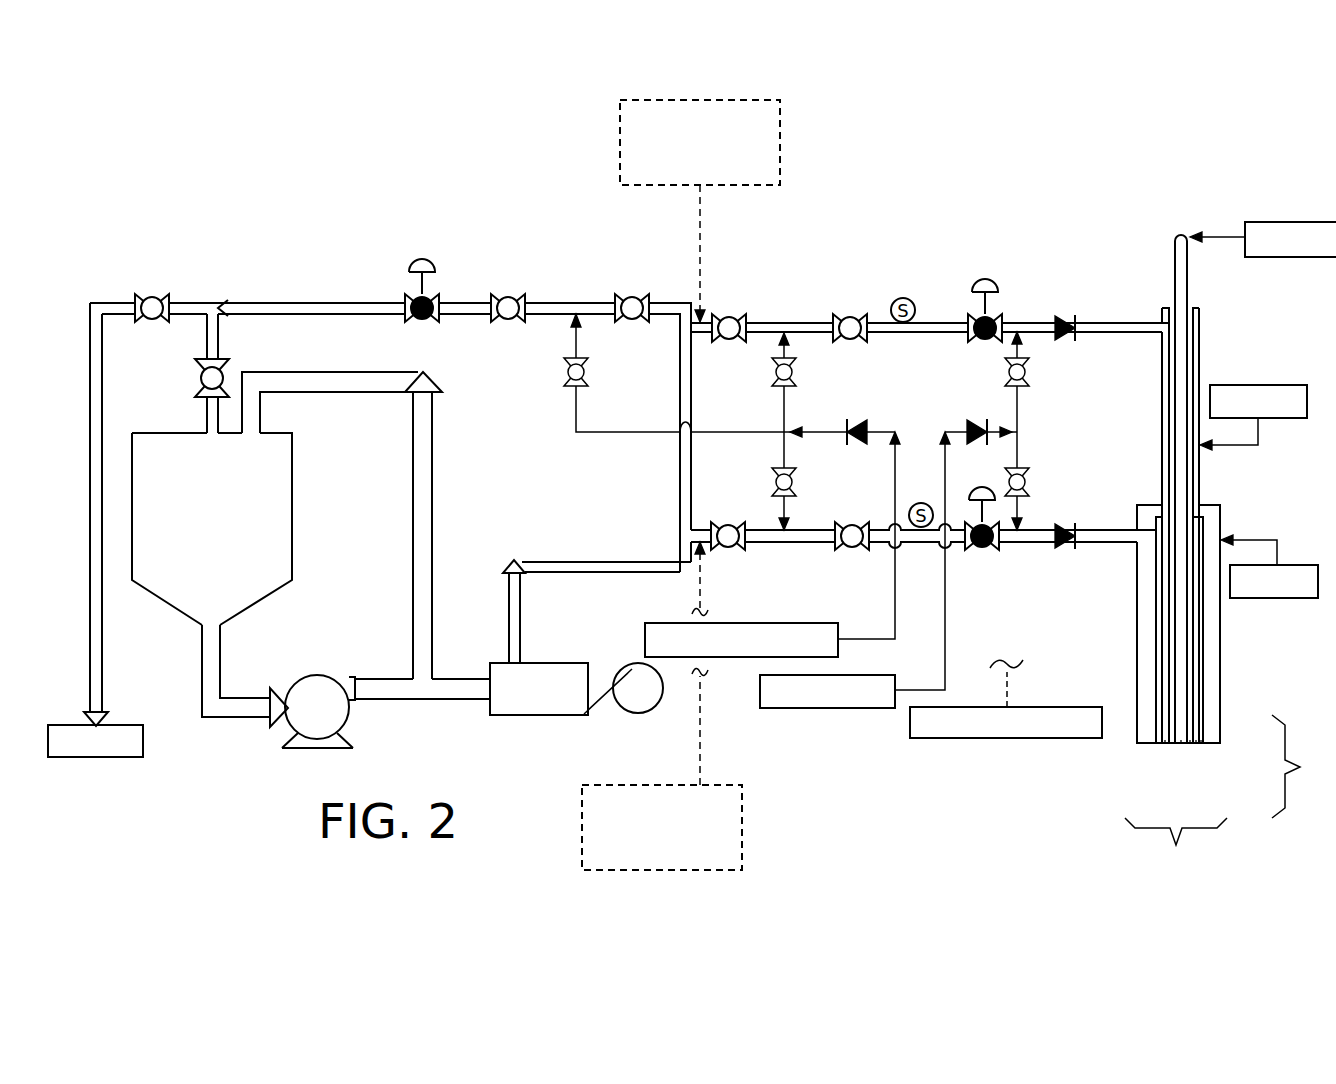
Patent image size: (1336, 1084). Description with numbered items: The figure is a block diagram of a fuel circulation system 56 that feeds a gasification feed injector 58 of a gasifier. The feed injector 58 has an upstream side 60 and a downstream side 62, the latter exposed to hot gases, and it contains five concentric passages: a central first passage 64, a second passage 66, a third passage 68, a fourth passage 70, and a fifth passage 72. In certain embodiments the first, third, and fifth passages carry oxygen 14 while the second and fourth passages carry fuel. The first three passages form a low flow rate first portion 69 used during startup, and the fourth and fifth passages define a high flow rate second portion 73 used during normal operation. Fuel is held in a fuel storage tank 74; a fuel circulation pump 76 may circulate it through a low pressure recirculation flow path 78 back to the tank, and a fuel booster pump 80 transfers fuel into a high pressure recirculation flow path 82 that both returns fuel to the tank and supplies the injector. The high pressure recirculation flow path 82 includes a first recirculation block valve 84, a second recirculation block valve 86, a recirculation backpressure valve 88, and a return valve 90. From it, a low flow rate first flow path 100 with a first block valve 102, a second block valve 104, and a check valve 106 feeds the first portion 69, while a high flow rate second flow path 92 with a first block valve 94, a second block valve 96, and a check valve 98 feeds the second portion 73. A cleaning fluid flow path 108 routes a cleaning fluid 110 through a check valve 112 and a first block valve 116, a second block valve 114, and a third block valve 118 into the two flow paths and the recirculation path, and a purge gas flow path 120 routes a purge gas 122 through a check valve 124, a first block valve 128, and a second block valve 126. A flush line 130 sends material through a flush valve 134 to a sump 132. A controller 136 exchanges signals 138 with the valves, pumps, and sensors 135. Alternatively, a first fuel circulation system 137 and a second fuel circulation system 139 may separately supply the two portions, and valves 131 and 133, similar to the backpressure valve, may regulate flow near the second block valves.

The oxygen 14 is at (1296, 222).
The fuel circulation system 56 is at (1002, 188).
The gasification feed injector 58 is at (1215, 315).
The upstream side 60 is at (1172, 222).
The downstream side 62 is at (1140, 758).
The first passage 64 is at (1164, 745).
The second passage 66 is at (1181, 745).
The third passage 68 is at (1190, 745).
The first portion 69 is at (1176, 851).
The fourth passage 70 is at (1196, 745).
The fifth passage 72 is at (1201, 745).
The second portion 73 is at (1304, 766).
The fuel storage tank 74 is at (168, 606).
The fuel circulation pump 76 is at (297, 681).
The low pressure recirculation flow path 78 is at (412, 532).
The fuel booster pump 80 is at (542, 664).
The high pressure recirculation flow path 82 is at (572, 302).
The first recirculation block valve 84 is at (634, 294).
The second recirculation block valve 86 is at (511, 294).
The recirculation backpressure valve 88 is at (425, 325).
The return valve 90 is at (198, 380).
The second flow path 92 is at (1010, 547).
The first block valve 94 is at (730, 549).
The second block valve 96 is at (855, 550).
The check valve 98 is at (1068, 550).
The first flow path 100 is at (958, 324).
The first block valve 102 is at (733, 313).
The second block valve 104 is at (855, 313).
The check valve 106 is at (1068, 316).
The cleaning fluid flow path 108 is at (897, 590).
The cleaning fluid 110 is at (645, 638).
The check valve 112 is at (861, 424).
The second block valve 114 is at (803, 482).
The first block valve 116 is at (773, 369).
The third block valve 118 is at (584, 373).
The purge gas flow path 120 is at (947, 622).
The purge gas 122 is at (770, 709).
The check valve 124 is at (978, 420).
The second block valve 126 is at (1030, 480).
The first block valve 128 is at (1028, 373).
The flush line 130 is at (88, 397).
The valve 131 is at (984, 276).
The sump 132 is at (95, 758).
The valve 133 is at (973, 491).
The flush valve 134 is at (147, 296).
The sensors 135 is at (903, 297).
The controller 136 is at (1005, 739).
The first fuel circulation system 137 is at (782, 143).
The signals 138 is at (1012, 690).
The second fuel circulation system 139 is at (742, 830).